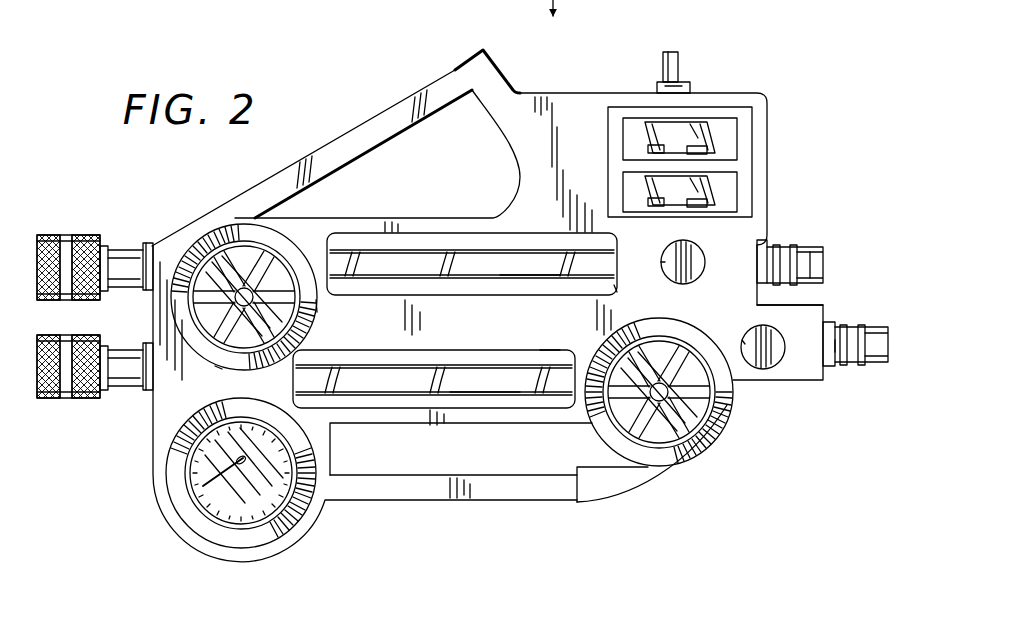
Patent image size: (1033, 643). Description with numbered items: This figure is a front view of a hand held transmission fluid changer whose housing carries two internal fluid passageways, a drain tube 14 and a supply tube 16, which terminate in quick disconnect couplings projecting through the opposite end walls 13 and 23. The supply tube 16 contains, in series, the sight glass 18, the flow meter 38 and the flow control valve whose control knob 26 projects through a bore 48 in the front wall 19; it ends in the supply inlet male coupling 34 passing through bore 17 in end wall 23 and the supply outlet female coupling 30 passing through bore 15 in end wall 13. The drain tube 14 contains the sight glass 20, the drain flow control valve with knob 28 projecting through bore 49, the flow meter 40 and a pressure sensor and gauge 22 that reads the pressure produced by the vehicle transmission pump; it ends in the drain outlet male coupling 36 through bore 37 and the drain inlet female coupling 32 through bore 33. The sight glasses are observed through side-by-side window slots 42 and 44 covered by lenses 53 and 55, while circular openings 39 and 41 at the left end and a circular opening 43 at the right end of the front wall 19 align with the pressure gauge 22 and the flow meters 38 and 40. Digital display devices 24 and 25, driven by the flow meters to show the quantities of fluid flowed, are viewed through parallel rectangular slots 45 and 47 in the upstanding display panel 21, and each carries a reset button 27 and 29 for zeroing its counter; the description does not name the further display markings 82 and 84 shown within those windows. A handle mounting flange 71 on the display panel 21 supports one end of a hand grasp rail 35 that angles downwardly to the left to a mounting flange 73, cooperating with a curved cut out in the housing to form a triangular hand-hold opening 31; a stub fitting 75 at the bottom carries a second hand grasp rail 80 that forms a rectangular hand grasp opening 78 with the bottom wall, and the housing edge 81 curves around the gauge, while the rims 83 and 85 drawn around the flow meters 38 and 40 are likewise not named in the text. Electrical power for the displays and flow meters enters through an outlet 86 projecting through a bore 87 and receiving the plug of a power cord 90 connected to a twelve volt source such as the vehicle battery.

The end wall 13 is at (151, 312).
The drain tube 14 is at (116, 397).
The bore 15 is at (146, 245).
The supply tube 16 is at (128, 238).
The bore 17 is at (769, 247).
The sight glass 18 is at (472, 282).
The front wall 19 is at (552, 196).
The sight glass 20 is at (473, 366).
The display panel 21 is at (568, 92).
The pressure sensor and gauge 22 is at (236, 490).
The end wall 23 is at (770, 304).
The digital display device 24 is at (720, 130).
The digital display device 25 is at (720, 186).
The flow control valve control knob 26 is at (708, 252).
The reset button 27 is at (709, 150).
The drain flow control valve control knob 28 is at (764, 372).
The reset button 29 is at (709, 203).
The supply outlet female quick disconnect coupling 30 is at (95, 236).
The triangular hand-hold opening 31 is at (423, 196).
The drain inlet female quick disconnect coupling 32 is at (84, 400).
The bore 33 is at (143, 389).
The supply inlet male quick disconnect coupling 34 is at (817, 248).
The hand grasp rail 35 is at (362, 123).
The drain outlet male quick disconnect coupling 36 is at (873, 363).
The bore 37 is at (830, 368).
The flow meter 38 is at (230, 230).
The circular opening 39 is at (168, 474).
The flow meter 40 is at (672, 433).
The circular opening 41 is at (222, 358).
The window slot 42 is at (616, 291).
The circular opening 43 is at (630, 456).
The window slot 44 is at (541, 351).
The rectangular slot 45 is at (627, 134).
The rectangular slot 47 is at (628, 190).
The bore 48 is at (664, 266).
The bore 49 is at (749, 342).
The lens 53 is at (512, 282).
The lens 55 is at (503, 408).
The handle mounting flange 71 is at (482, 50).
The mounting flange 73 is at (229, 278).
The stub fitting 75 is at (585, 503).
The rectangular hand grasp opening 78 is at (416, 462).
The hand grasp rail 80 is at (403, 500).
The housing arc 81 is at (178, 516).
The display indicator 82 is at (646, 149).
The valve ring 83 is at (322, 311).
The display indicator 84 is at (656, 207).
The valve ring 85 is at (696, 320).
The outlet 86 is at (656, 90).
The bore 87 is at (691, 88).
The power cord 90 is at (679, 56).